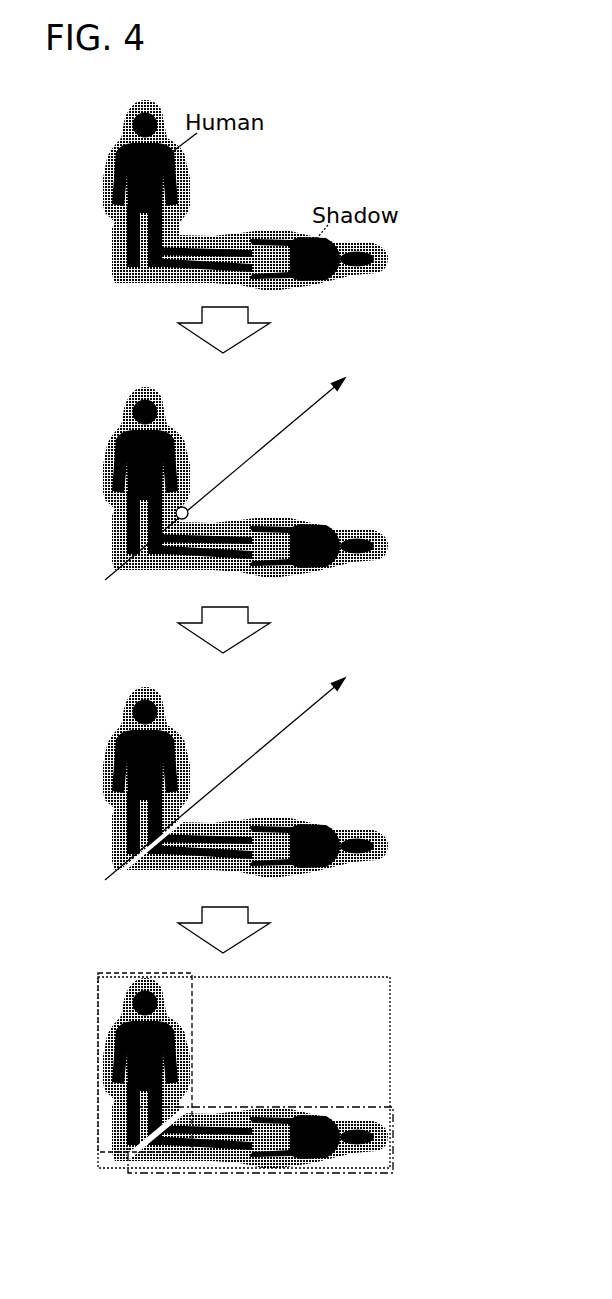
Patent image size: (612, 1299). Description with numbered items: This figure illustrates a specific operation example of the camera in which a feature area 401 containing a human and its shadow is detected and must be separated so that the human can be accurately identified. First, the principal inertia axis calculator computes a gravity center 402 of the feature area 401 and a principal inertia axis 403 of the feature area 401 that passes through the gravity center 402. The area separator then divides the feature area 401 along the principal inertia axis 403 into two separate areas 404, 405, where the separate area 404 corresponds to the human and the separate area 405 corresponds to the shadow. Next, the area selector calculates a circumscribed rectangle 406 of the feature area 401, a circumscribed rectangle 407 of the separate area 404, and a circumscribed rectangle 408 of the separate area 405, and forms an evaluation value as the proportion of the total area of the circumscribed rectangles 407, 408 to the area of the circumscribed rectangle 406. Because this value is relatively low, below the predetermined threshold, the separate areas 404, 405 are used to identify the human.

The feature area 401 is at (242, 232).
The gravity center 402 is at (190, 512).
The principal inertia axis 403 is at (277, 435).
The separate area 404 is at (187, 748).
The separate area 405 is at (305, 823).
The circumscribed rectangle 406 is at (390, 1027).
The circumscribed rectangle 407 is at (192, 1040).
The circumscribed rectangle 408 is at (280, 1107).